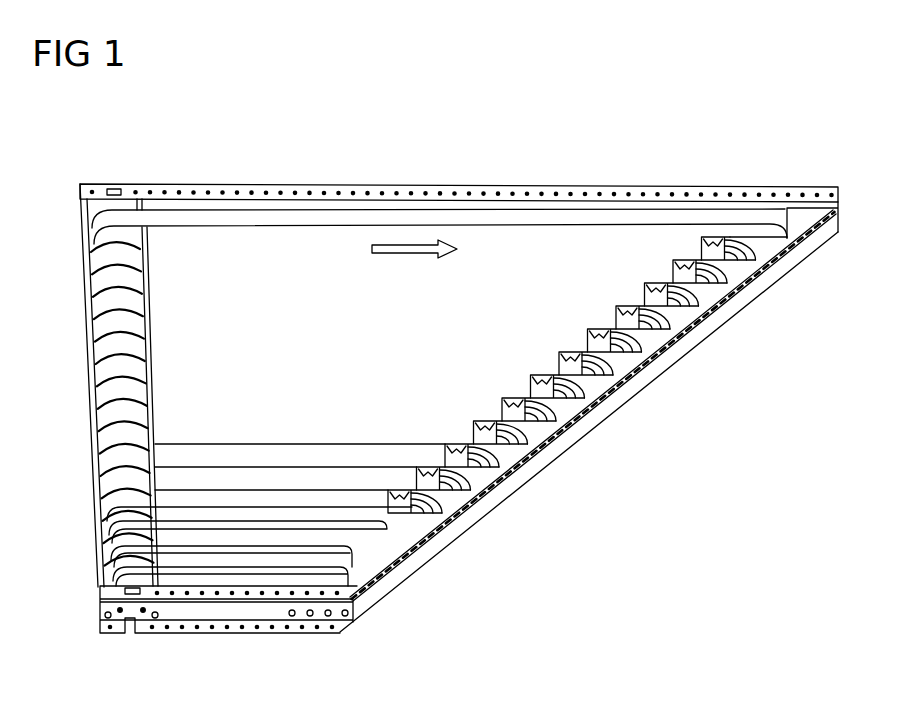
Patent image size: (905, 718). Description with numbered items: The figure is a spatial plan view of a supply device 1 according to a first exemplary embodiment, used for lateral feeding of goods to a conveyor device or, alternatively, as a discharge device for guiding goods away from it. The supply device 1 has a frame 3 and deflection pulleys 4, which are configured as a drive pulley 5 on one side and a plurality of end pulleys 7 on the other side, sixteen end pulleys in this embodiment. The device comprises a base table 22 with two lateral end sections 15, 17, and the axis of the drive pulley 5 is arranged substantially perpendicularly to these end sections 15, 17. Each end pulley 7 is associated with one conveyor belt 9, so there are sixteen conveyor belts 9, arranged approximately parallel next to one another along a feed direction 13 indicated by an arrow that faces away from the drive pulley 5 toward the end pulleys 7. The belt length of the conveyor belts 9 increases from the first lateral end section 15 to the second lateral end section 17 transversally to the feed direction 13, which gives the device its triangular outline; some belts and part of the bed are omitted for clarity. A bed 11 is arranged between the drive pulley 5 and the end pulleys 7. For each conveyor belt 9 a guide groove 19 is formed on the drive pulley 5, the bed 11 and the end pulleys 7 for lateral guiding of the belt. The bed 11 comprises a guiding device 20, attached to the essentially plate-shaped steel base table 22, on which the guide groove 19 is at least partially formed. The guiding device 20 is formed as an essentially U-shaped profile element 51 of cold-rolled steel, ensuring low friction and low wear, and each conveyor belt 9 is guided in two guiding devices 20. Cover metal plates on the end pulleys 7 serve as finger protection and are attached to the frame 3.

The supply device 1 is at (246, 157).
The frame 3 is at (651, 366).
The deflection pulleys 4 is at (72, 240).
The drive pulley 5 is at (100, 328).
The end pulleys 7 is at (458, 490).
The conveyor belt 9 is at (273, 228).
The bed 11 is at (598, 247).
The feed direction 13 is at (408, 258).
The first lateral end section 15 is at (241, 634).
The second lateral end section 17 is at (504, 184).
The guide groove 19 is at (191, 471).
The guiding device 20 is at (305, 415).
The base table 22 is at (263, 355).
The U-shaped profile element 51 is at (388, 444).